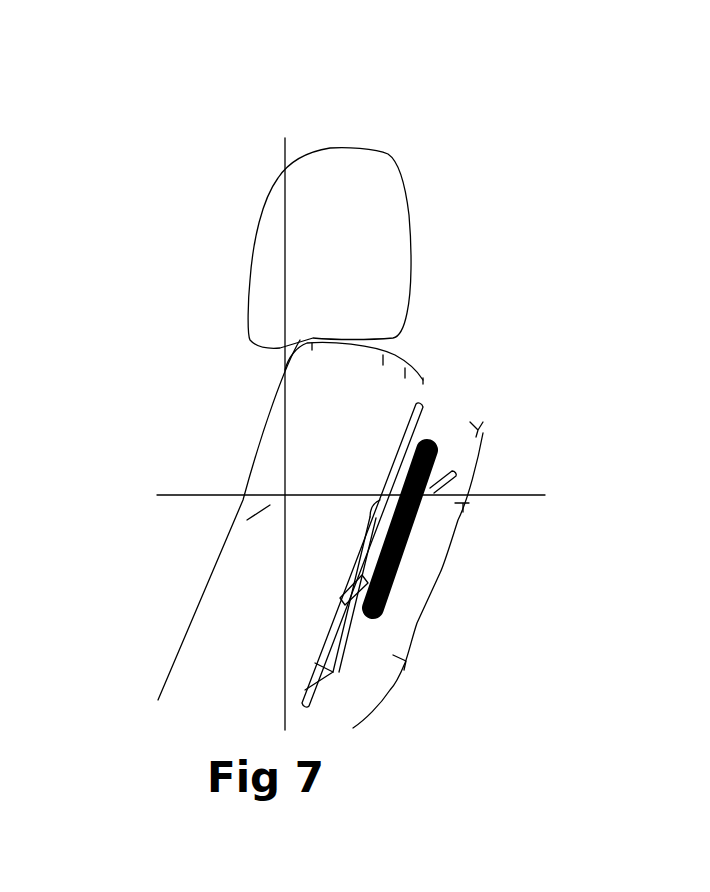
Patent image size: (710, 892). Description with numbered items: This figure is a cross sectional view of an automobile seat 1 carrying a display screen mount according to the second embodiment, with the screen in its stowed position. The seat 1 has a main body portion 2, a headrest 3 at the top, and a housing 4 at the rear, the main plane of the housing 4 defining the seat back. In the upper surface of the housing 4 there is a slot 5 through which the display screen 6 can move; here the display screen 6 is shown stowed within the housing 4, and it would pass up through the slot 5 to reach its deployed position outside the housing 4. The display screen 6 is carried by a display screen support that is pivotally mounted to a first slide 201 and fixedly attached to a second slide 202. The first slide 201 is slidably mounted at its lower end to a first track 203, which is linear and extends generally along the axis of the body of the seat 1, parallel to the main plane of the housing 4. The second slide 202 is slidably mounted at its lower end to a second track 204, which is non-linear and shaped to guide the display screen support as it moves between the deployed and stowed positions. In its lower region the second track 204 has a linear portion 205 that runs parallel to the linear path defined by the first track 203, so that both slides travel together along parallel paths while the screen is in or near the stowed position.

The seat 1 is at (203, 405).
The main body portion 2 is at (247, 473).
The headrest 3 is at (347, 150).
The housing 4 is at (447, 563).
The slot 5 is at (472, 413).
The display screen 6 is at (433, 440).
The first slide 201 is at (367, 587).
The second slide 202 is at (340, 629).
The first track 203 is at (362, 600).
The second track 204 is at (317, 660).
The linear portion 205 is at (330, 623).